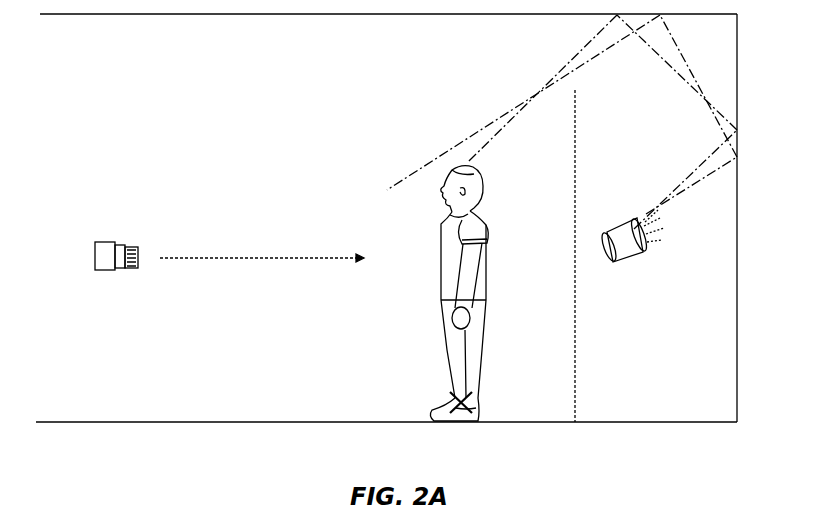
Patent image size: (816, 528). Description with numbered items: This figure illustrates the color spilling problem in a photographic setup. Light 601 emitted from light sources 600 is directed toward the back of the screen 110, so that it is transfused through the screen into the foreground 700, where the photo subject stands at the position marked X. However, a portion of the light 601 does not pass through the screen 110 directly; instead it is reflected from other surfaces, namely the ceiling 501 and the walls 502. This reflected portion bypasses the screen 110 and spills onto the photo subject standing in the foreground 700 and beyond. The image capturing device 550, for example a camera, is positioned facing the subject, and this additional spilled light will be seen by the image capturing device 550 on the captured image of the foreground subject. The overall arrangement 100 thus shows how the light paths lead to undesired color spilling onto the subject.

The light beam / system 100 is at (543, 126).
The screen 110 is at (574, 394).
The ceiling 501 is at (267, 17).
The walls 502 is at (737, 338).
The image capturing device 550 is at (105, 271).
The light sources 600 is at (632, 258).
The light 601 is at (424, 165).
The foreground 700 is at (472, 395).